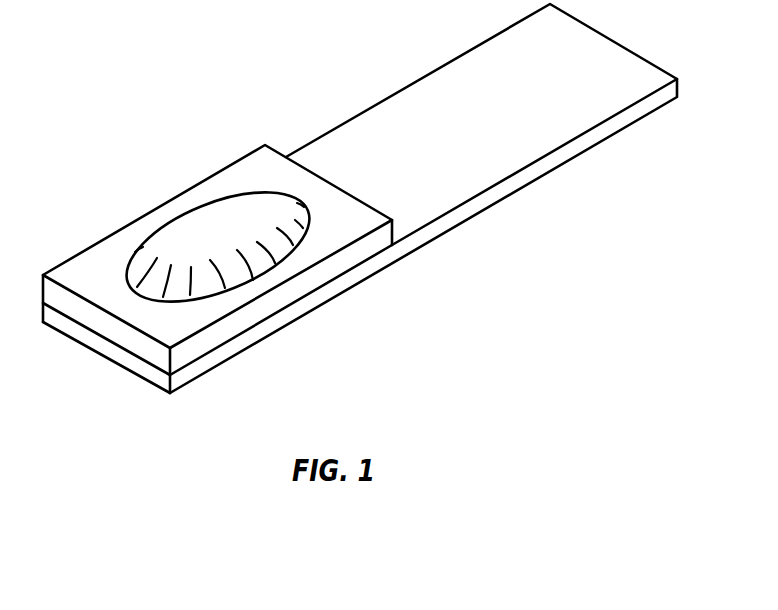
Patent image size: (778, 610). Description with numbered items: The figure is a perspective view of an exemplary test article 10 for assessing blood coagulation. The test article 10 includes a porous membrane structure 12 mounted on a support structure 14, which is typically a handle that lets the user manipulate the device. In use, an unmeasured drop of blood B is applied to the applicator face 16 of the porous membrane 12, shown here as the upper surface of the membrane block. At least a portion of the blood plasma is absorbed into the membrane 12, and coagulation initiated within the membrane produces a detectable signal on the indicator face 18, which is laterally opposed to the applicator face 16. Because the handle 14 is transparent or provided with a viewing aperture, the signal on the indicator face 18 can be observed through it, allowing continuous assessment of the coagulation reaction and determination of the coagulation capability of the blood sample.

The test article 10 is at (288, 80).
The porous membrane structure 12 is at (305, 287).
The support structure 14 is at (458, 213).
The applicator face 16 is at (75, 260).
The indicator face 18 is at (358, 268).
The blood sample B is at (193, 215).